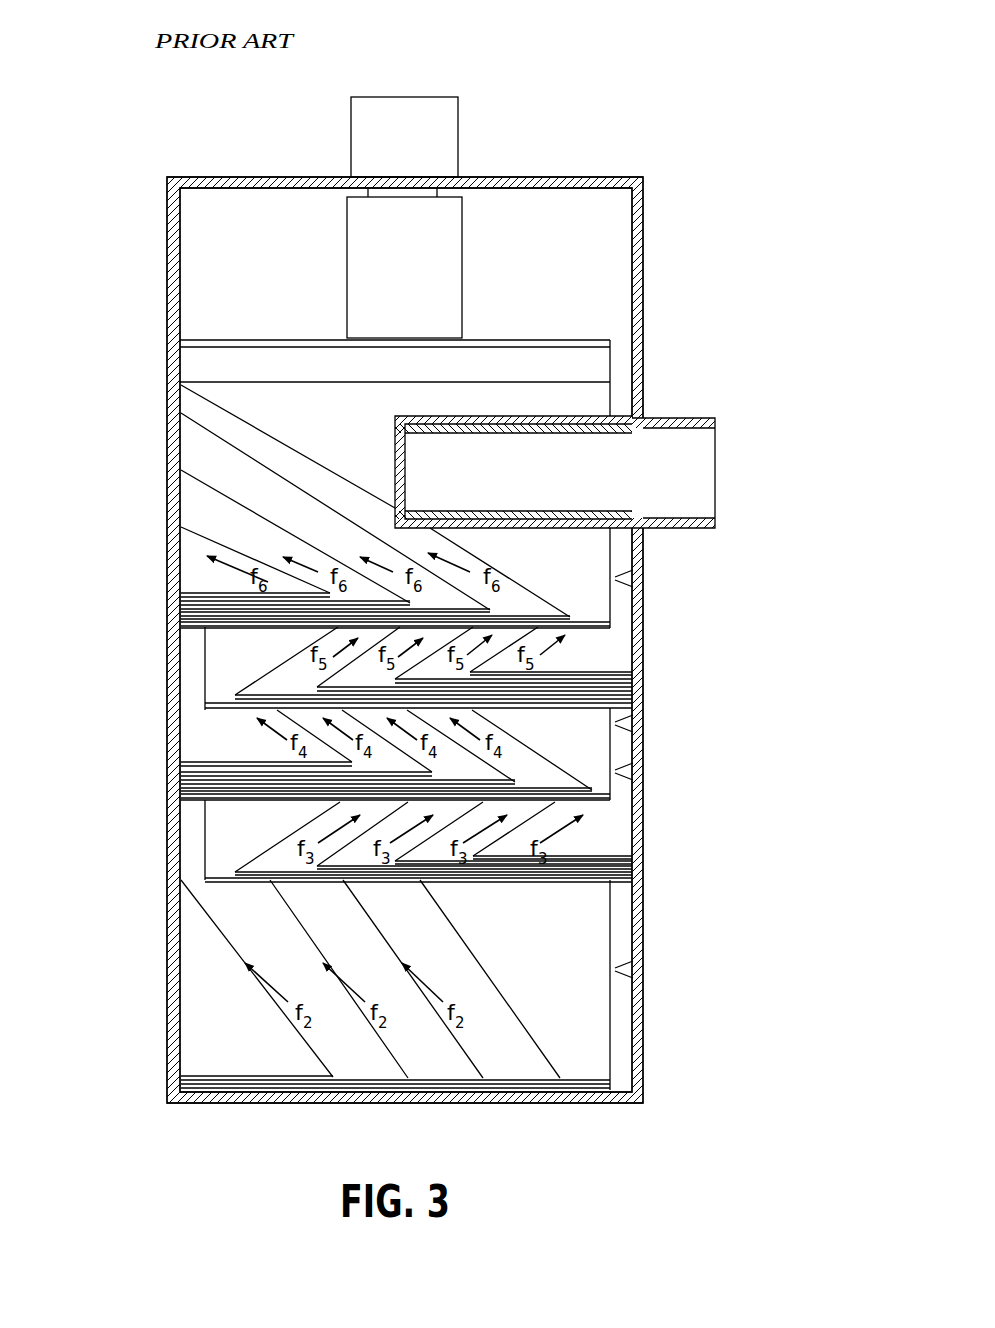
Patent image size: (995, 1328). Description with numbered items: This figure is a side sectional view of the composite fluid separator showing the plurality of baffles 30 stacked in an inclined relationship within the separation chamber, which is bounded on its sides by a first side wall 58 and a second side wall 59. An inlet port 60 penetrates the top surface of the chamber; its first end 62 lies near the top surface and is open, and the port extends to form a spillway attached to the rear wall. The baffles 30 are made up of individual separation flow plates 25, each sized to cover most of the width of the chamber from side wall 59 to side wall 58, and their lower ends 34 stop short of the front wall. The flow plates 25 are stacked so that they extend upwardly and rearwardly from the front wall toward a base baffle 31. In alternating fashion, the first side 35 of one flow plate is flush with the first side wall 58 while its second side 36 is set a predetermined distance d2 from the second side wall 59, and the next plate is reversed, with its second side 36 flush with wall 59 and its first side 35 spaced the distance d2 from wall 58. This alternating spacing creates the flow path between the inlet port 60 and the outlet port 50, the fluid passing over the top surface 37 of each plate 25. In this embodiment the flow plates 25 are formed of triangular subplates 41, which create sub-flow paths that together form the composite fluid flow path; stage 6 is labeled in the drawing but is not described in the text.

The uppermost filter stage 6 is at (180, 598).
The separation flow plate 25 is at (590, 548).
The plurality of baffles 30 is at (150, 392).
The base baffle 31 is at (597, 1070).
The lower ends of the baffles 34 is at (600, 630).
The first side of separation flow plate 35 is at (180, 498).
The second side of separation flow plate 36 is at (613, 357).
The top surface of separation flow plate 37 is at (587, 395).
The triangular subplates 41 is at (205, 432).
The outlet port 50 is at (717, 470).
The first side wall 58 is at (170, 1083).
The second side wall 59 is at (643, 1080).
The inlet port 60 is at (447, 148).
The first end of inlet port 62 is at (433, 93).
The predetermined distance d2 is at (680, 977).